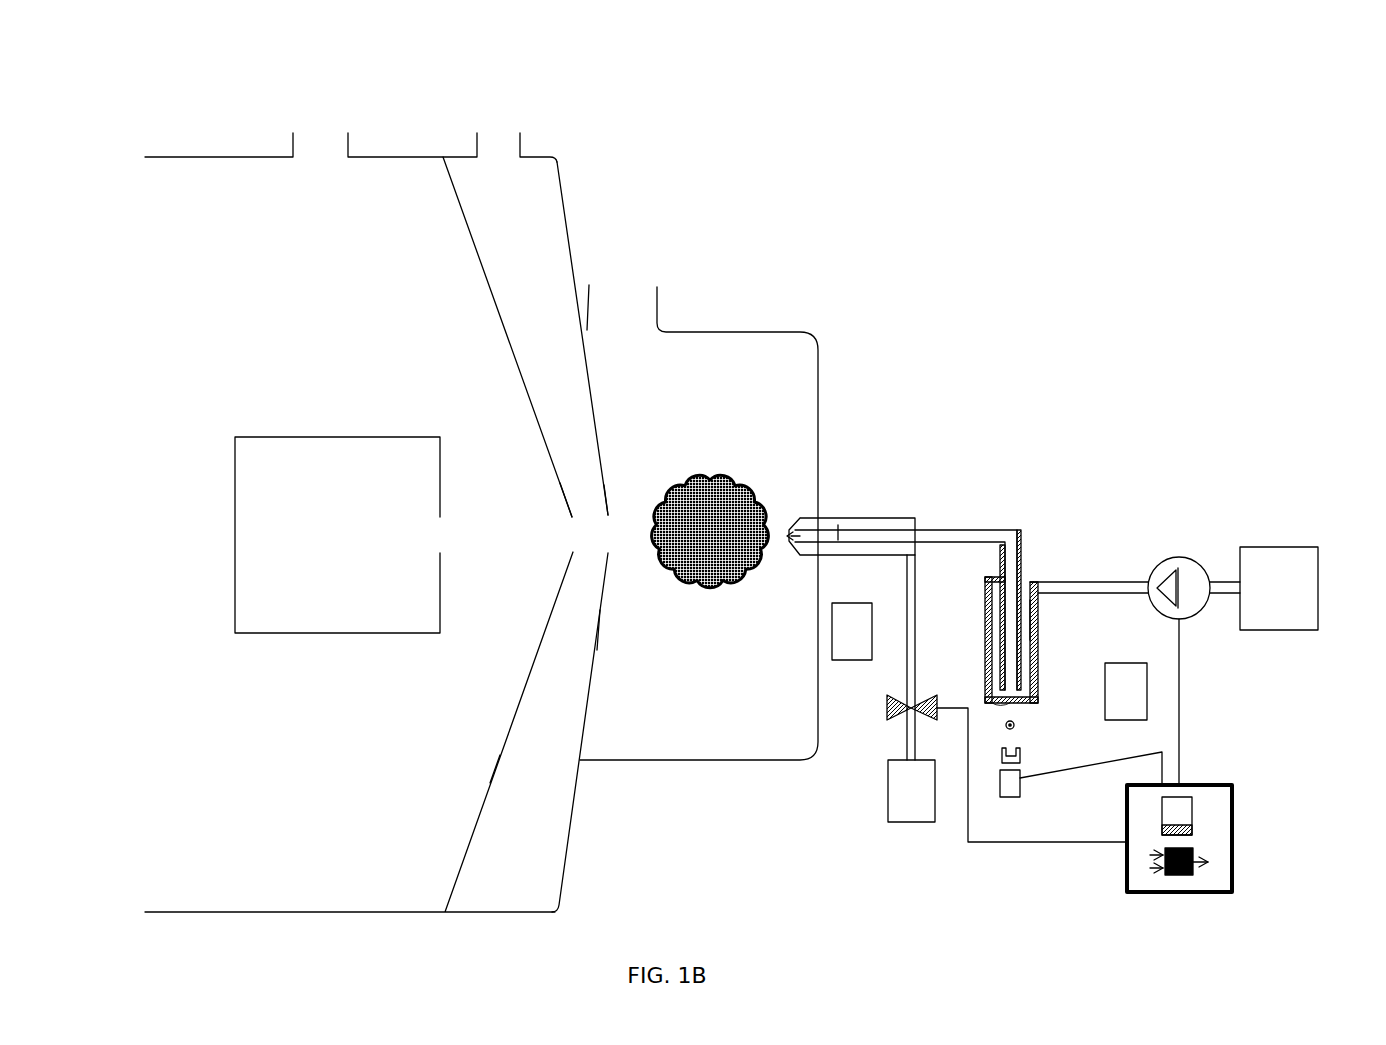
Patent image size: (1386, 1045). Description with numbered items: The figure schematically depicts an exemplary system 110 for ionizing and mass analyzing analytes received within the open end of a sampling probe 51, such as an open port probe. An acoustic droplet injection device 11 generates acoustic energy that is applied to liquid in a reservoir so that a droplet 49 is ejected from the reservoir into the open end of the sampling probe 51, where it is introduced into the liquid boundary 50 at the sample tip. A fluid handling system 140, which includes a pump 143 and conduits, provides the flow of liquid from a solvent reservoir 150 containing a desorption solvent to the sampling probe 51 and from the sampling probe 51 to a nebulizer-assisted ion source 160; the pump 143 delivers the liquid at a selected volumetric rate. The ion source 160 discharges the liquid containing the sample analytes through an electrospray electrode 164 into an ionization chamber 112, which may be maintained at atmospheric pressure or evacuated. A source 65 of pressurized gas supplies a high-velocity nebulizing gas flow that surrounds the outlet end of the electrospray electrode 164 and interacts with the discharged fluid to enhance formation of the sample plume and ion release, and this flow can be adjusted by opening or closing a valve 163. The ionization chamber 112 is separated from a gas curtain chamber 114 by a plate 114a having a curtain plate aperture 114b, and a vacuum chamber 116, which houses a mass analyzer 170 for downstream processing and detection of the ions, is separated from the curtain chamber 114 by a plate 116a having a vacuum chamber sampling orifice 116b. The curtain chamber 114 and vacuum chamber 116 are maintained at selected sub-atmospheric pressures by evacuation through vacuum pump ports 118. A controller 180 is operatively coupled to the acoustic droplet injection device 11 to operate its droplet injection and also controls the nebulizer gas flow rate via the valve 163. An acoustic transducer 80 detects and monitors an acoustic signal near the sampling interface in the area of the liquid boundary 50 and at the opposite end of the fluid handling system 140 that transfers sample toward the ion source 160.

The system 110 is at (903, 884).
The ionization chamber 112 is at (754, 741).
The gas curtain chamber 114 is at (496, 889).
The plate 114a is at (597, 652).
The curtain plate aperture 114b is at (610, 532).
The vacuum chamber 116 is at (378, 889).
The plate 116a is at (492, 770).
The vacuum chamber sampling orifice 116b is at (555, 532).
The vacuum pump ports 118 is at (328, 120).
The mass analyzer 170 is at (337, 535).
The ion source 160 is at (900, 482).
The electrospray electrode 164 is at (838, 528).
The valve 163 is at (887, 709).
The source of pressurized gas 65 is at (911, 791).
The acoustic transducer 80 is at (805, 577).
The fluid handling system 140 is at (1058, 568).
The sampling probe 51 is at (1056, 630).
The liquid boundary 50 is at (1012, 703).
The droplet 49 is at (1015, 728).
The acoustic droplet injection device 11 is at (1042, 789).
The pump 143 is at (1167, 560).
The solvent reservoir 150 is at (1279, 588).
The controller 180 is at (1232, 858).